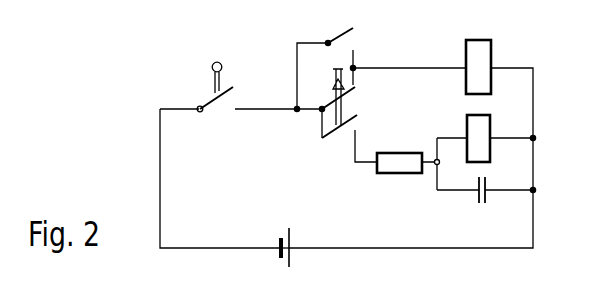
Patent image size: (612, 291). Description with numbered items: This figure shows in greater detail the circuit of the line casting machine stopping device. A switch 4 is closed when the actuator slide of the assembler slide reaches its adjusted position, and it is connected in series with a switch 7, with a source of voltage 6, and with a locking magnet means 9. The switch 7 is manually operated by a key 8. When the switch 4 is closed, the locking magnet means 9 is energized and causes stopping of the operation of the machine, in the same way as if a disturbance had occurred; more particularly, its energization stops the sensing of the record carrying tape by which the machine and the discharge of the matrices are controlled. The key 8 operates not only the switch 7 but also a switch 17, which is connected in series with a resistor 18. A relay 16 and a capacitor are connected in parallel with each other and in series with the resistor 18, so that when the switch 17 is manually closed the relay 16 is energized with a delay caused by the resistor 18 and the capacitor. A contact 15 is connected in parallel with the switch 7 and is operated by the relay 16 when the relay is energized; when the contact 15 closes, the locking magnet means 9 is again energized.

The switch 4 is at (235, 90).
The contact 15 is at (355, 35).
The key 8 is at (333, 75).
The switch 7 is at (348, 93).
The switch 17 is at (355, 124).
The locking magnet means 9 is at (483, 53).
The relay 16 is at (482, 147).
The resistor 18 is at (403, 168).
The source of voltage 6 is at (277, 241).